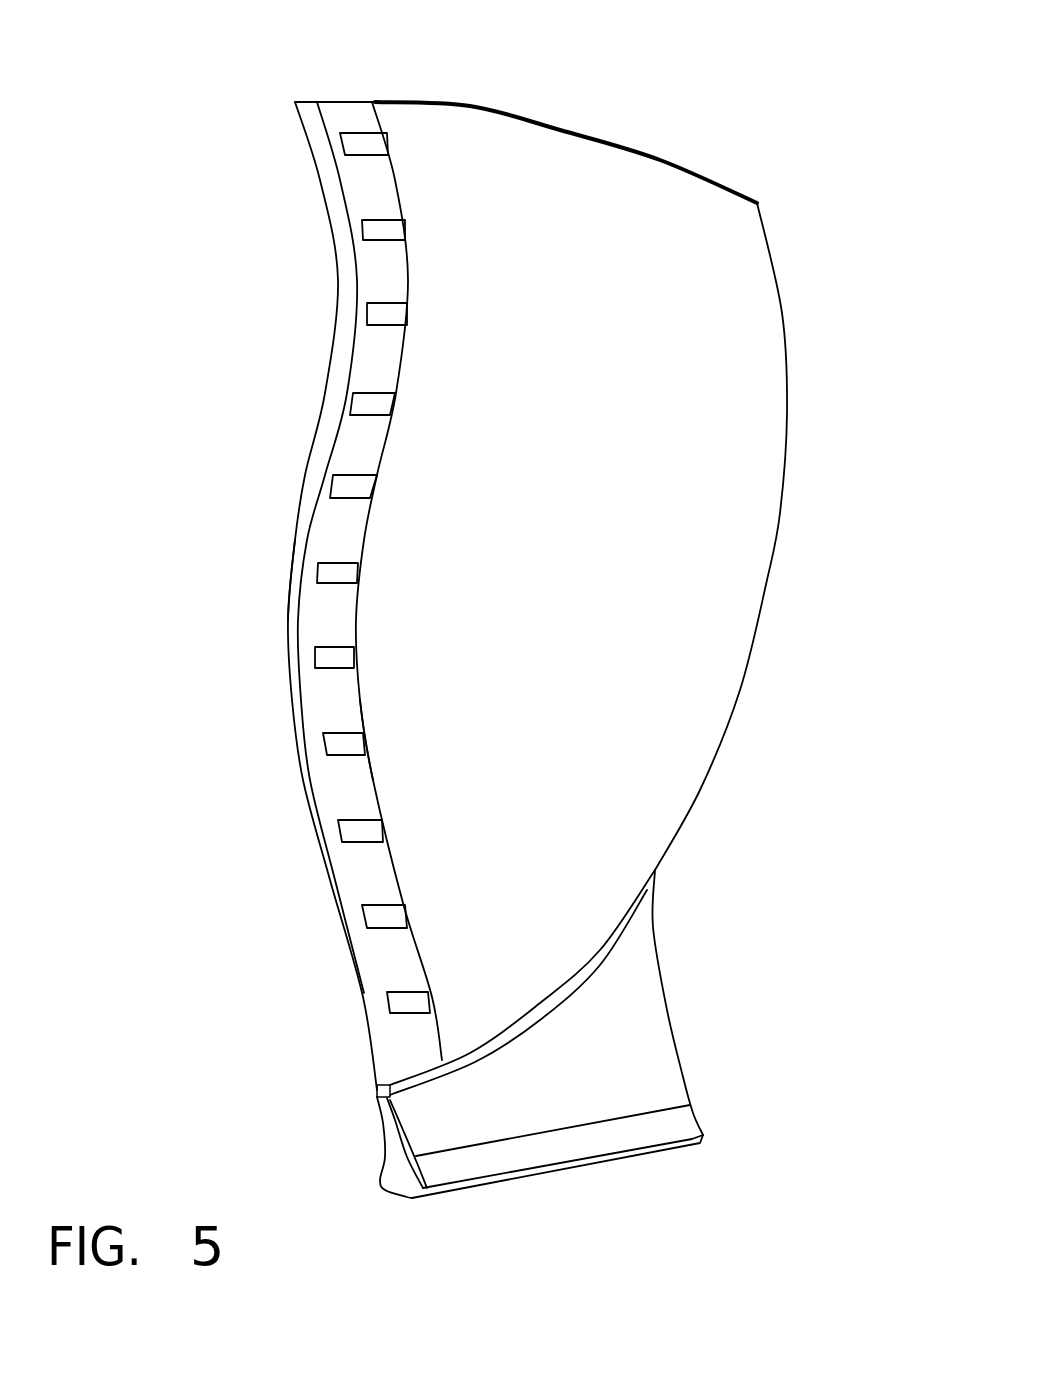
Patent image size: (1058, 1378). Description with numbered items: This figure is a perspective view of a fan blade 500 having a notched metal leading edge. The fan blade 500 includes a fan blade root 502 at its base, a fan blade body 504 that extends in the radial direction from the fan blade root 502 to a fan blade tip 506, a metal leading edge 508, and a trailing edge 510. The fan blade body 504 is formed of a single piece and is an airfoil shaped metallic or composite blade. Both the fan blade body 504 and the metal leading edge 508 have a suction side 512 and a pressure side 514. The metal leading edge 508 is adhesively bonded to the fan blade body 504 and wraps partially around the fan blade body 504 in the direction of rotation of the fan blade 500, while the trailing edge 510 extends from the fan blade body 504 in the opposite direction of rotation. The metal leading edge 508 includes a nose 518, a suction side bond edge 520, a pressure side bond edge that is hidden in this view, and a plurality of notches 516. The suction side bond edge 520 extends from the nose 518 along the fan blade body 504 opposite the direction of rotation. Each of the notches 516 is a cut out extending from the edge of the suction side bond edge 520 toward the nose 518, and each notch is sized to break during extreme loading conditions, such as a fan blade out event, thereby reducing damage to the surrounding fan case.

The fan blade 500 is at (687, 75).
The fan blade root 502 is at (650, 1150).
The fan blade body 504 is at (585, 645).
The fan blade tip 506 is at (542, 123).
The metal leading edge 508 is at (305, 535).
The trailing edge 510 is at (775, 541).
The suction side 512 is at (490, 330).
The pressure side 514 is at (337, 275).
The plurality of notches 516 is at (345, 143).
The nose 518 is at (290, 560).
The suction side bond edge 520 is at (374, 781).